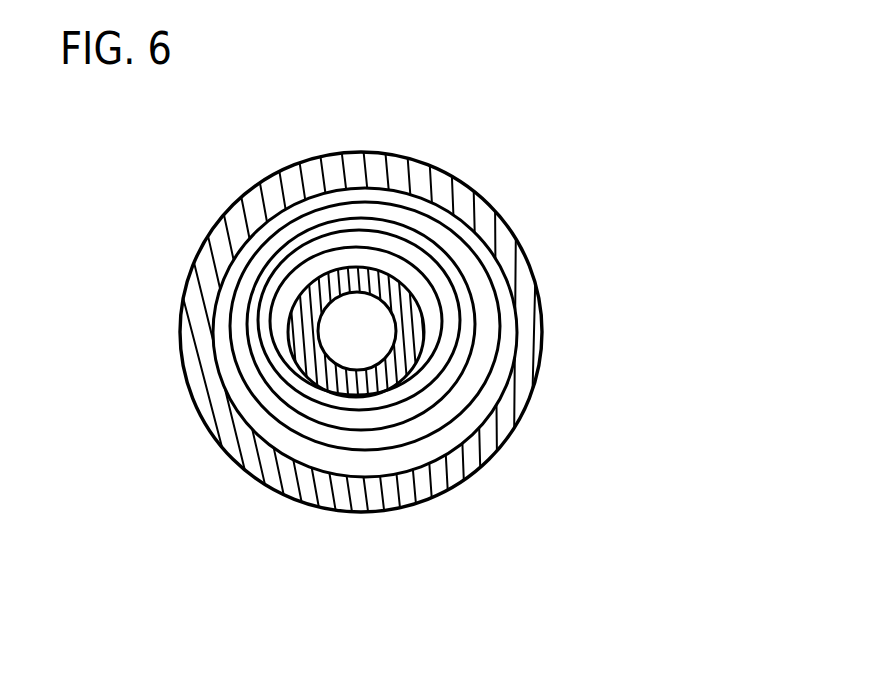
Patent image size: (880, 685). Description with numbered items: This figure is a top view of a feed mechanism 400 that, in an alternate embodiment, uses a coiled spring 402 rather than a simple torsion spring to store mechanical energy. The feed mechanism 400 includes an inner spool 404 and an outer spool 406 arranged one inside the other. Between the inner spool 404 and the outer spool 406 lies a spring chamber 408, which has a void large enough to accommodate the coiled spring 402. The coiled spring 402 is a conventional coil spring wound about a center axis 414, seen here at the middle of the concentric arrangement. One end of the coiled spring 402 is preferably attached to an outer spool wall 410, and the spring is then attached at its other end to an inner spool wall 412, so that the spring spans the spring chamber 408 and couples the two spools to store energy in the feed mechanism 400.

The feed mechanism 400 is at (572, 203).
The coiled spring 402 is at (293, 438).
The inner spool 404 is at (370, 388).
The outer spool 406 is at (238, 455).
The spring chamber 408 is at (483, 390).
The outer spool wall 410 is at (230, 336).
The inner spool wall 412 is at (397, 393).
The center axis 414 is at (355, 333).